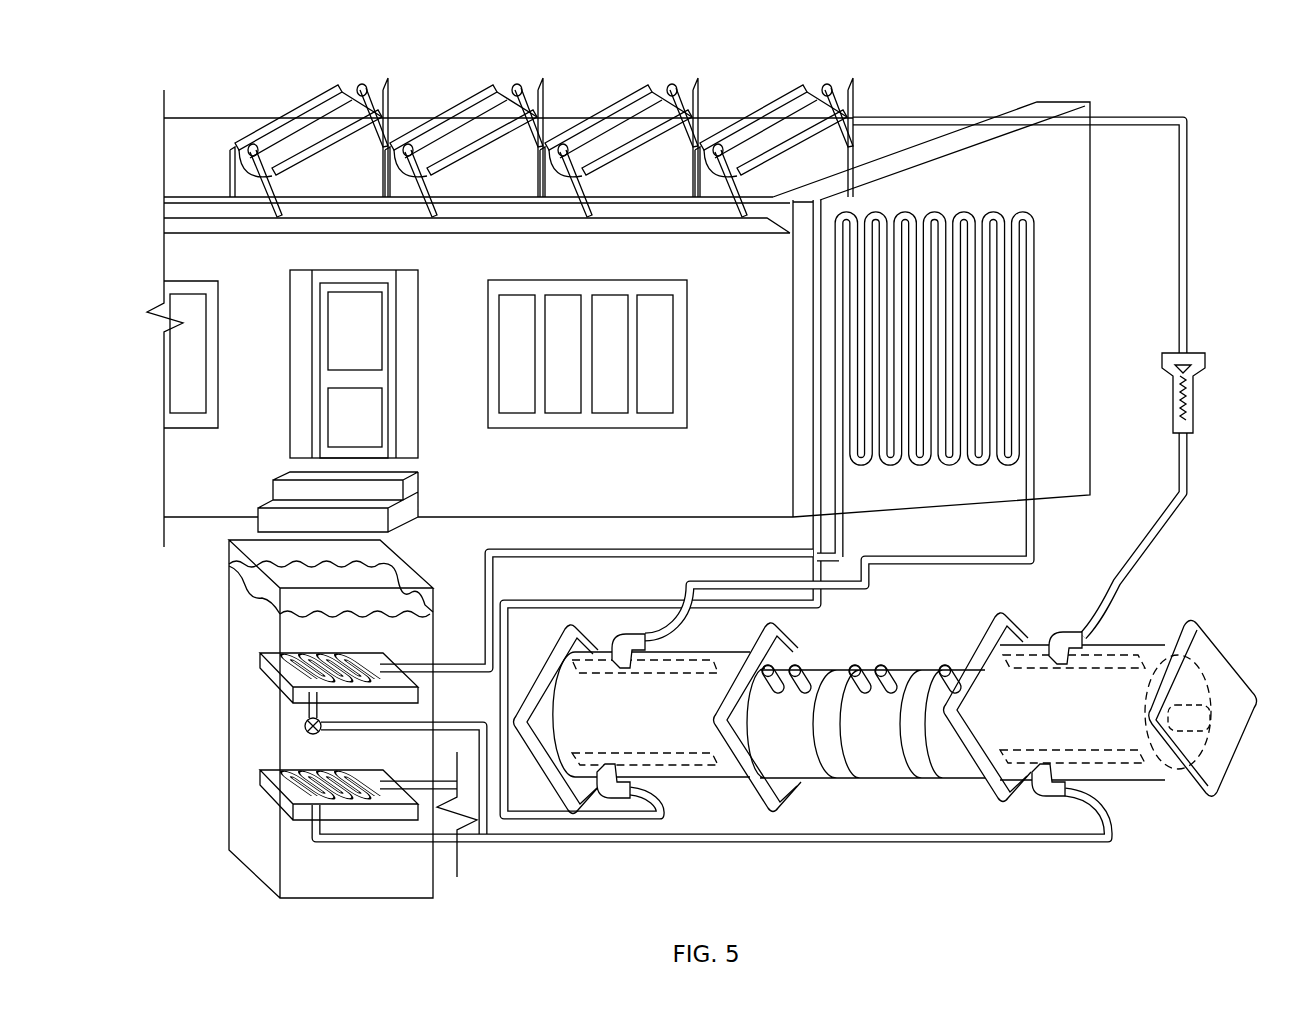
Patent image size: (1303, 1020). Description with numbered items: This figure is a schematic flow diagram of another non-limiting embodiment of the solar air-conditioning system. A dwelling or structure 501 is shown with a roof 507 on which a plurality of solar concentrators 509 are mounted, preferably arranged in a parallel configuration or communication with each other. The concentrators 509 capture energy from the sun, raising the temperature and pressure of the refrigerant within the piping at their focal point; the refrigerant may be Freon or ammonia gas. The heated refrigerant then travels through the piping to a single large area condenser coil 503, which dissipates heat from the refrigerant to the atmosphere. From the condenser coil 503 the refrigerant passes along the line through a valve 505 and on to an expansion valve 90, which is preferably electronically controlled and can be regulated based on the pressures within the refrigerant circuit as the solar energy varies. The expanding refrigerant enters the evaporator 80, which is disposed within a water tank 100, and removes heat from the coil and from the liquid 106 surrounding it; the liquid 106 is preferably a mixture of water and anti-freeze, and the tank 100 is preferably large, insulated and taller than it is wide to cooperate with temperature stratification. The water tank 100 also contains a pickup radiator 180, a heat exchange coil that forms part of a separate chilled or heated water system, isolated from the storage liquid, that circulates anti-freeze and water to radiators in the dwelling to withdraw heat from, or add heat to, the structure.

The roof of building 507 is at (207, 133).
The concentrators 509 is at (437, 112).
The valve and supply line 505 is at (1072, 325).
The large area condenser coil 503 is at (937, 474).
The building 501 is at (610, 462).
The water tank 100 is at (443, 628).
The liquid 106 is at (258, 581).
The evaporator 80 is at (258, 666).
The expansion valve 90 is at (424, 679).
The pickup radiator 180 is at (258, 782).